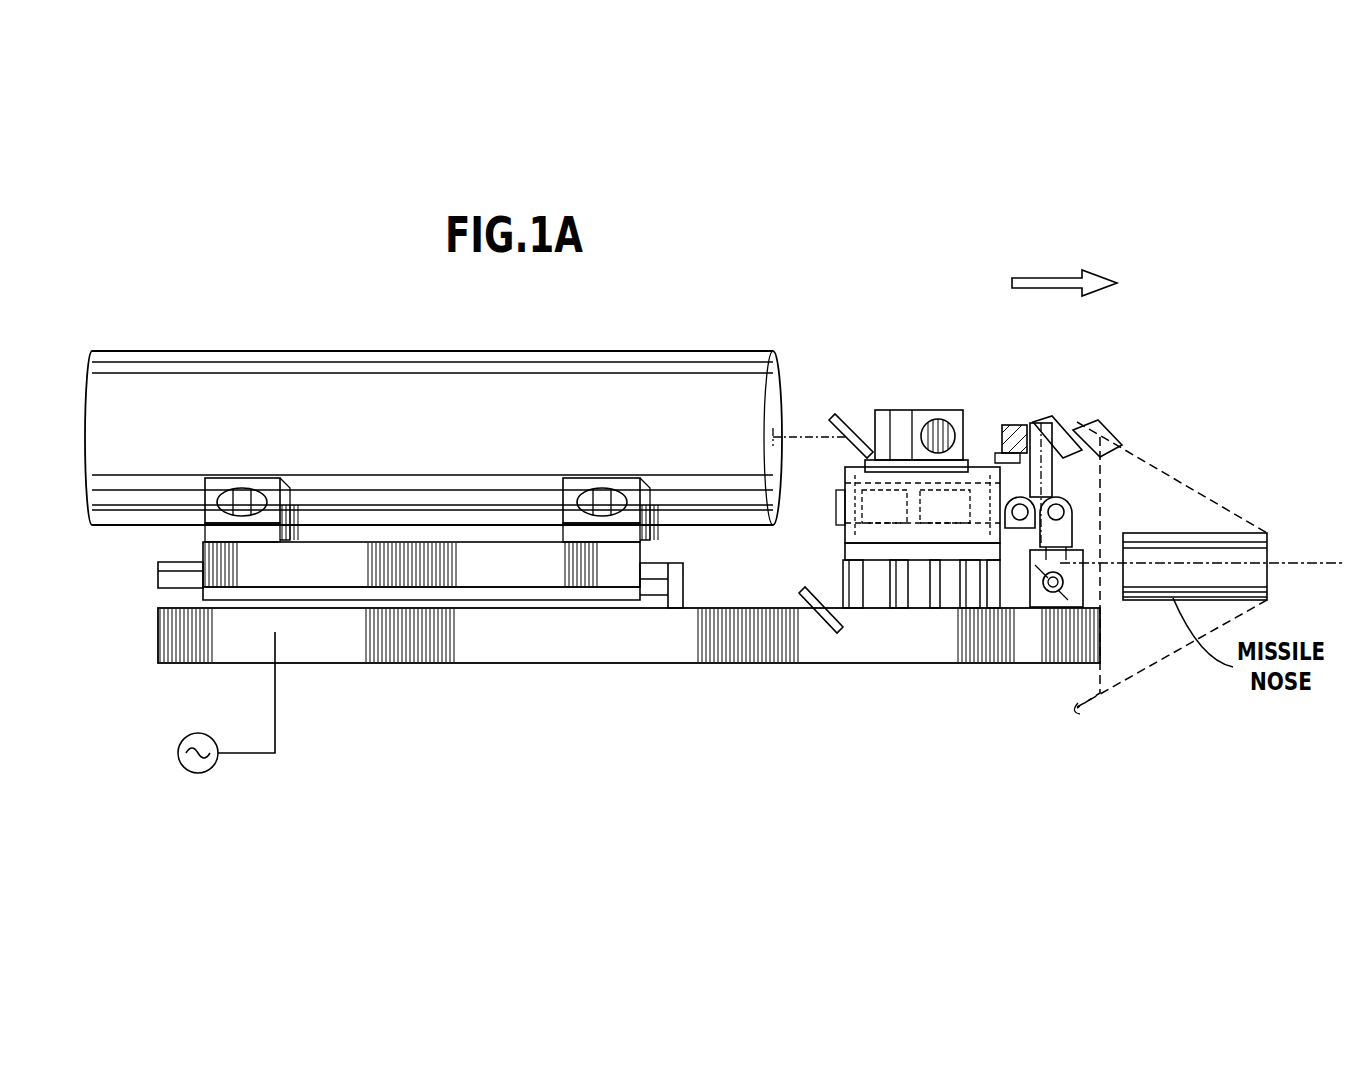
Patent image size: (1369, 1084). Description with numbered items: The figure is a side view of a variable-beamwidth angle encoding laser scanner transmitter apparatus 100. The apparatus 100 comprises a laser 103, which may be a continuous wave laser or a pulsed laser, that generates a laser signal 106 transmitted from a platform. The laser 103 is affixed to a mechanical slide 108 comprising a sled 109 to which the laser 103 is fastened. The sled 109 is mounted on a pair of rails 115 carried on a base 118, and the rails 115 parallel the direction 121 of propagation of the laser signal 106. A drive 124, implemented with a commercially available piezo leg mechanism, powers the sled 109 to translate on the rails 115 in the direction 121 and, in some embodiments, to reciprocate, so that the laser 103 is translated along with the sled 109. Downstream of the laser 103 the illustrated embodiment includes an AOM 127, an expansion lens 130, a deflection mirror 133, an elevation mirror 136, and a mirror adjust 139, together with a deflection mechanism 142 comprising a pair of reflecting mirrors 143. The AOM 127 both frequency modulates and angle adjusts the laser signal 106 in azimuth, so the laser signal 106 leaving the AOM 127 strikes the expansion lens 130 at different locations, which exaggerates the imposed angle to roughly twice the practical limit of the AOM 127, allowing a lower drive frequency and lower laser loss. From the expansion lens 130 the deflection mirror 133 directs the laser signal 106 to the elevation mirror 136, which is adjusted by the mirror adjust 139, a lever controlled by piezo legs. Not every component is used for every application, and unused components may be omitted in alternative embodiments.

The VAL transmitter scanner apparatus 100 is at (203, 300).
The laser 103 is at (373, 350).
The laser signal 106 is at (812, 437).
The mechanical slide 108 is at (689, 679).
The sled 109 is at (475, 578).
The rails 115 is at (167, 590).
The base 118 is at (160, 640).
The direction 121 is at (1053, 277).
The drive 124 is at (195, 775).
The AOM 127 is at (930, 410).
The expansion lens 130 is at (1018, 423).
The deflection mirror 133 is at (1090, 420).
The elevation mirror 136 is at (1078, 595).
The mirror adjust 139 is at (1062, 500).
The deflection mechanism 142 is at (815, 626).
The reflecting mirrors 143 is at (841, 412).